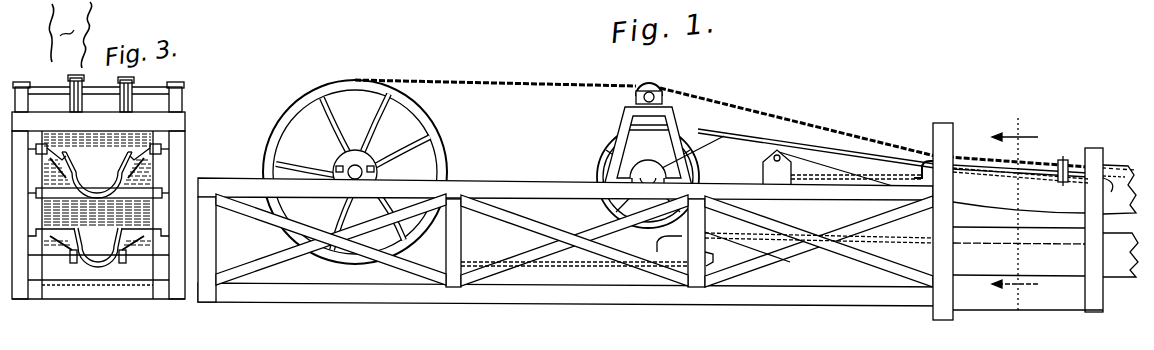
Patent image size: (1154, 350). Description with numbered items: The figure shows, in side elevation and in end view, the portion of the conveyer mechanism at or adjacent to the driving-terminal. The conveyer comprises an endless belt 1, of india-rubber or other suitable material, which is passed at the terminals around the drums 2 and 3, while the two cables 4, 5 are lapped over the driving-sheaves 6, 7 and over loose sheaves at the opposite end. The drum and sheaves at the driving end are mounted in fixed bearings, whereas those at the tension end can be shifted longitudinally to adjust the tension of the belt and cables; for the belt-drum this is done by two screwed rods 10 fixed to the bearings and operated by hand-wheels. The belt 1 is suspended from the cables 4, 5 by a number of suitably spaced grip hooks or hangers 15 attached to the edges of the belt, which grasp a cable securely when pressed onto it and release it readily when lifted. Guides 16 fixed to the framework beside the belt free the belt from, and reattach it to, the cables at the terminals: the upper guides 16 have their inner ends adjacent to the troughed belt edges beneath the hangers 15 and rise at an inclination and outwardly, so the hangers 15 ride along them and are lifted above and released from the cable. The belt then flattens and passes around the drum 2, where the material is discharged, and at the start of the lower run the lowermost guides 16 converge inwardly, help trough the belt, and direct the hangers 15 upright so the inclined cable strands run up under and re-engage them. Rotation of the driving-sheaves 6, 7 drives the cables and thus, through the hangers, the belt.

In FIG. 3, the endless belt 1 is at (97, 209).
In FIG. 1, the endless belt 1 is at (728, 139).
In FIG. 3, the drum 2 is at (98, 237).
In FIG. 1, the drum 2 is at (704, 176).
In FIG. 1, the drum 3 is at (1015, 213).
In FIG. 3, the cable 4 is at (134, 80).
In FIG. 3, the cable 5 is at (75, 78).
In FIG. 1, the cable 5 is at (745, 118).
In FIG. 3, the driving-sheave 6 is at (133, 105).
In FIG. 3, the driving-sheave 7 is at (74, 100).
In FIG. 1, the driving-sheave 7 is at (446, 128).
In FIG. 1, the screwed rod 10 is at (928, 144).
In FIG. 1, the grip hook or hanger 15 is at (1085, 167).
In FIG. 3, the guide 16 is at (118, 160).
In FIG. 1, the guide 16 is at (838, 181).